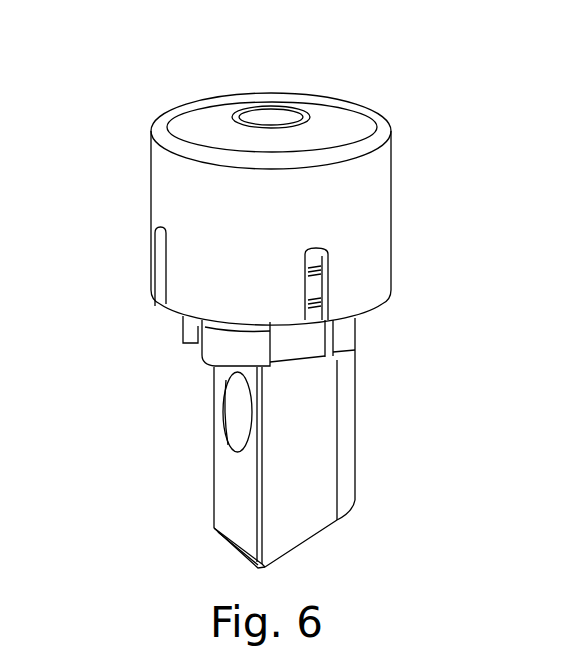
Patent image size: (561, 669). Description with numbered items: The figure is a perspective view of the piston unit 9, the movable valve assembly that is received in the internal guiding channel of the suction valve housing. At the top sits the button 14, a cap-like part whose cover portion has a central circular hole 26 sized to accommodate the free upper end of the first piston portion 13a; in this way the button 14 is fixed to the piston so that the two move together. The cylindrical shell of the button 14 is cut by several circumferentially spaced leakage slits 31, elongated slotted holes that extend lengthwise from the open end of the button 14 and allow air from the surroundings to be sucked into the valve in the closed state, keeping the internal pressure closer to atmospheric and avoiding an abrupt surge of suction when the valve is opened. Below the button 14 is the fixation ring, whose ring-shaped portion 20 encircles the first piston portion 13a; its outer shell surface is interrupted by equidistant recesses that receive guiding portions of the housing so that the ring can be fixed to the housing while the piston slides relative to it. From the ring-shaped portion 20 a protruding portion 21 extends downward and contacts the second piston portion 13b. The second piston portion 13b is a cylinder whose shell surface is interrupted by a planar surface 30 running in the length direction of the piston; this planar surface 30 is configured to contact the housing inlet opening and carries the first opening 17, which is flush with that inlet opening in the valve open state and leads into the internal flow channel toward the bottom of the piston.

The piston unit 9 is at (426, 242).
The first piston portion 13a is at (262, 116).
The second piston portion 13b is at (322, 508).
The button 14 is at (147, 203).
The first opening 17 is at (221, 413).
The ring-shaped portion 20 is at (361, 333).
The protruding portion 21 is at (361, 400).
The circular hole 26 is at (290, 103).
The planar surface 30 is at (215, 507).
The leakage slits 31 is at (153, 308).